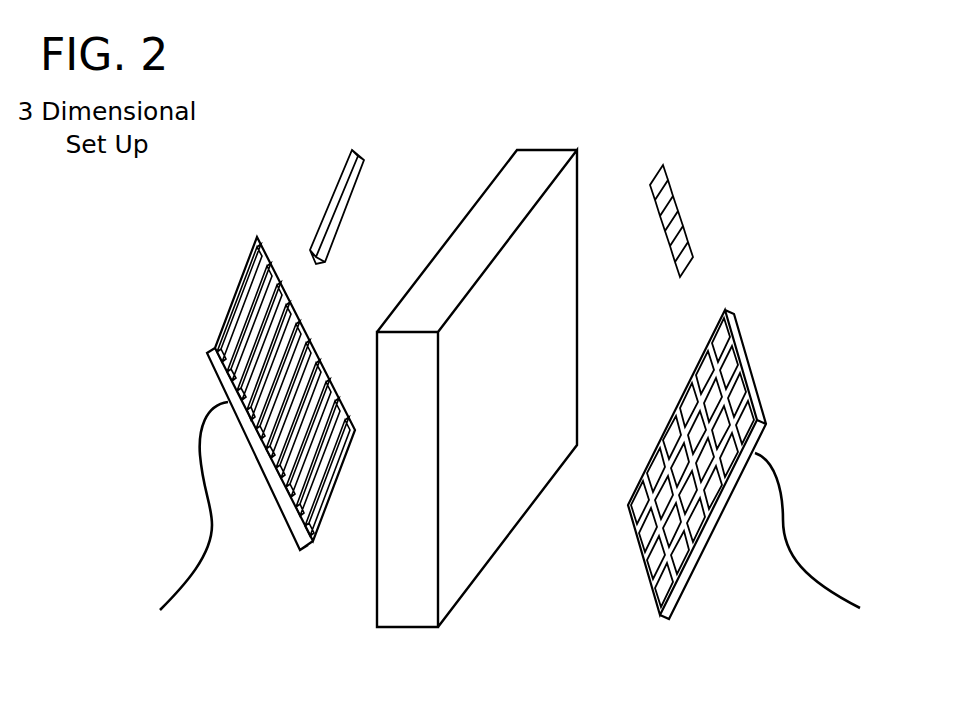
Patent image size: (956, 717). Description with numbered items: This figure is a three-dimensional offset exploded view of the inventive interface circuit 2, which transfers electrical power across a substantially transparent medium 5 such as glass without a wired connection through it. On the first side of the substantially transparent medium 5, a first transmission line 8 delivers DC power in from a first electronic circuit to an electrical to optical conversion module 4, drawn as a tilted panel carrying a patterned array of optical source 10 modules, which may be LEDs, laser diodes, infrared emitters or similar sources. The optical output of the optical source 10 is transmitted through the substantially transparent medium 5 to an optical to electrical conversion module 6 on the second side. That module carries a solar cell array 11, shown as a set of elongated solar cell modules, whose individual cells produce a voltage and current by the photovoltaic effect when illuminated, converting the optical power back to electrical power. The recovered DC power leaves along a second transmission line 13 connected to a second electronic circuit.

The interface circuit 2 is at (476, 96).
The electrical to optical conversion module 4 is at (641, 564).
The substantially transparent medium 5 is at (550, 150).
The optical to electrical conversion module 6 is at (276, 505).
The first transmission line 8 is at (813, 573).
The optical source 10 is at (624, 431).
The solar cell array 11 is at (338, 202).
The second transmission line 13 is at (188, 574).